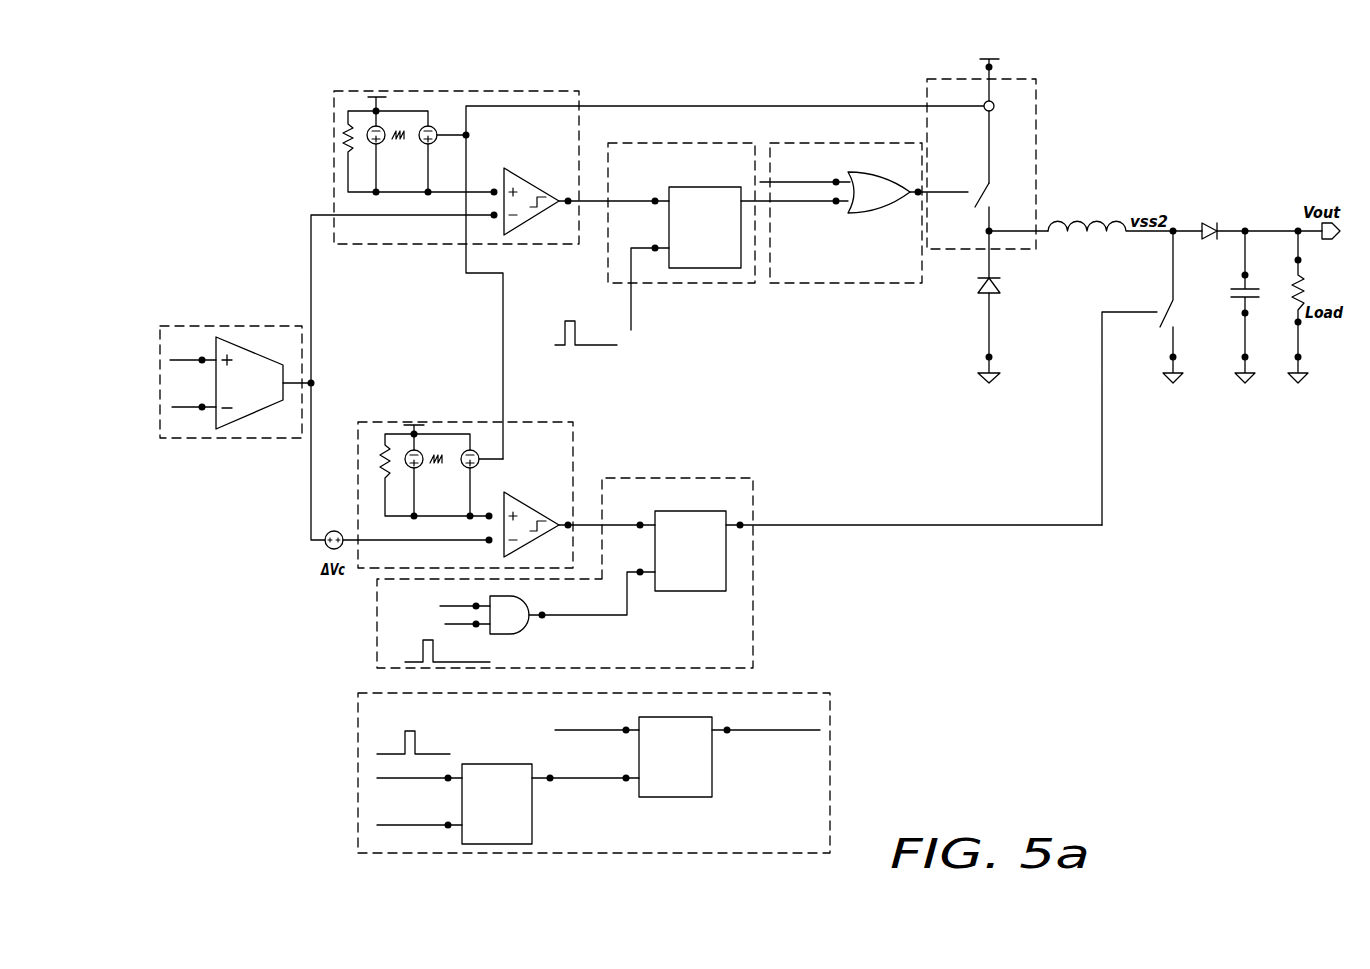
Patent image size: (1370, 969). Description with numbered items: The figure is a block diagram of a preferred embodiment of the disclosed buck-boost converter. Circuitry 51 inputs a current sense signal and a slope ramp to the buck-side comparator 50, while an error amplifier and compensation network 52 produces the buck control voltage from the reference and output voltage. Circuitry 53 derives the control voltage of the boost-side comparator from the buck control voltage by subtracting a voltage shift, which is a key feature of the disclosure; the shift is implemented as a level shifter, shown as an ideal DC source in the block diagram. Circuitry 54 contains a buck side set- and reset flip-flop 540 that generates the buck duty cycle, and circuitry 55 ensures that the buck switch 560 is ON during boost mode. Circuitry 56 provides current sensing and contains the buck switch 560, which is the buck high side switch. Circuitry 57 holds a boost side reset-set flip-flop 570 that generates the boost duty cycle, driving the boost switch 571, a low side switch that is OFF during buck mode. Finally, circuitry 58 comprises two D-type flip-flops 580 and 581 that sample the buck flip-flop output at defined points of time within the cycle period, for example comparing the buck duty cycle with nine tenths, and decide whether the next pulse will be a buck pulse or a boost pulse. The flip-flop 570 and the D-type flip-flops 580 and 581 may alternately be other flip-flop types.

The buck-side comparator 50 is at (532, 195).
The circuitry to input current sense and slope ramp 51 is at (590, 151).
The error amplifier and compensation network 52 is at (206, 326).
The circuitry with control voltage of boost-side comparator 53 is at (586, 470).
The circuitry with buck side set-reset flip-flop 54 is at (698, 143).
The circuitry to ensure buck switch is ON during boost mode 55 is at (876, 143).
The circuitry for current sense and buck switch 56 is at (1036, 118).
The circuitry for boost side reset-set flip-flop 57 is at (753, 612).
The circuitry comprising two D-type flip-flops 58 is at (830, 705).
The buck side set- and reset flip-flop 540 is at (695, 187).
The buck switch 560 is at (985, 186).
The boost side reset-set flip-flop 570 is at (679, 511).
The boost switch 571 is at (1165, 308).
The D-type flip-flop 580 is at (484, 764).
The D-type flip-flop 581 is at (664, 717).